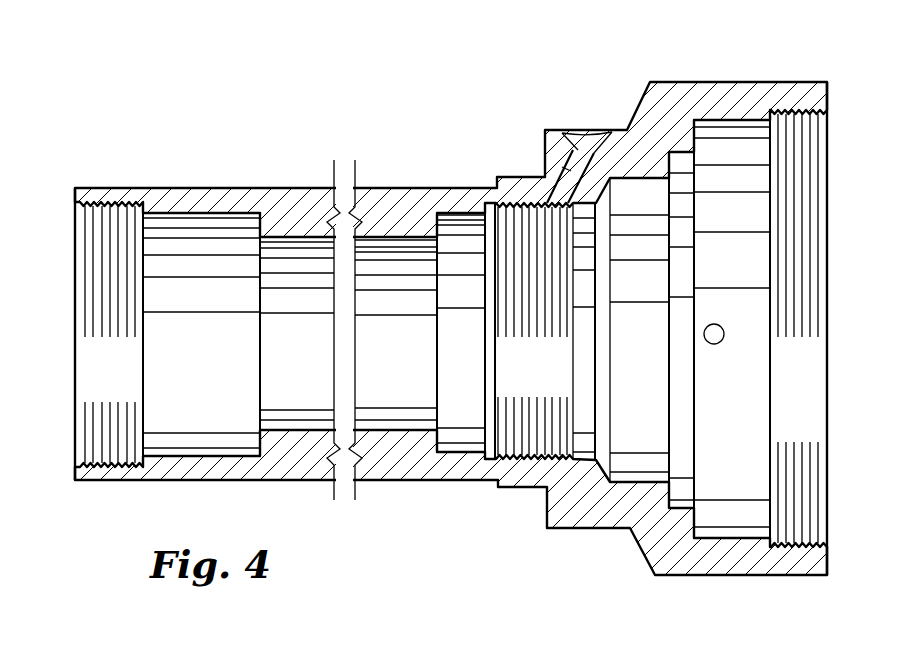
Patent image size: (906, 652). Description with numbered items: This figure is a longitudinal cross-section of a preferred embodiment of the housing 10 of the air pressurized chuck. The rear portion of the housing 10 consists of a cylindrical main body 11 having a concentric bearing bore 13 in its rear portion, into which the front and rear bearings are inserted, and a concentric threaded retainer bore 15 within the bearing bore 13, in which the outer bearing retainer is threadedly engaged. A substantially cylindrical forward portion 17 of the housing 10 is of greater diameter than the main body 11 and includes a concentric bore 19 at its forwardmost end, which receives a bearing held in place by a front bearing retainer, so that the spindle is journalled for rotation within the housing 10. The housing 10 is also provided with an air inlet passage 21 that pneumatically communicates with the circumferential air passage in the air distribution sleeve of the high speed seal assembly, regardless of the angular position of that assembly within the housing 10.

The housing 10 is at (478, 133).
The cylindrical main body 11 is at (300, 212).
The bearing bore 13 is at (205, 277).
The threaded retainer bore 15 is at (108, 463).
The forward portion 17 is at (670, 110).
The bore 19 is at (731, 537).
The air inlet passage 21 is at (595, 140).